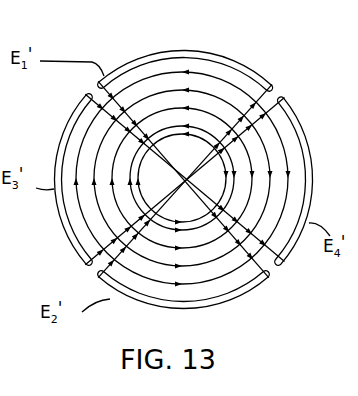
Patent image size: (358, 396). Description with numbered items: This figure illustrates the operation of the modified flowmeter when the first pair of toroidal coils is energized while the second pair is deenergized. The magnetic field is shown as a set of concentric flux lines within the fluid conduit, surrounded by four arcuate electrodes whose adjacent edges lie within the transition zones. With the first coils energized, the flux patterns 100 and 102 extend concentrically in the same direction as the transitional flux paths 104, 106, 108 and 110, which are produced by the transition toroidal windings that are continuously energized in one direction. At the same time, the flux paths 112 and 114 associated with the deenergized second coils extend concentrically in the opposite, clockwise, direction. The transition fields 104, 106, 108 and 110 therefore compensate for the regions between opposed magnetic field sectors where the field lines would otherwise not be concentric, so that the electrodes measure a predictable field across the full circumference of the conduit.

The flux pattern 100 is at (245, 81).
The flux pattern 102 is at (234, 283).
The transitional flux path 104 is at (101, 88).
The transitional flux path 106 is at (273, 101).
The transitional flux path 108 is at (95, 262).
The transitional flux path 110 is at (267, 268).
The flux path 112 is at (78, 155).
The flux path 114 is at (278, 172).